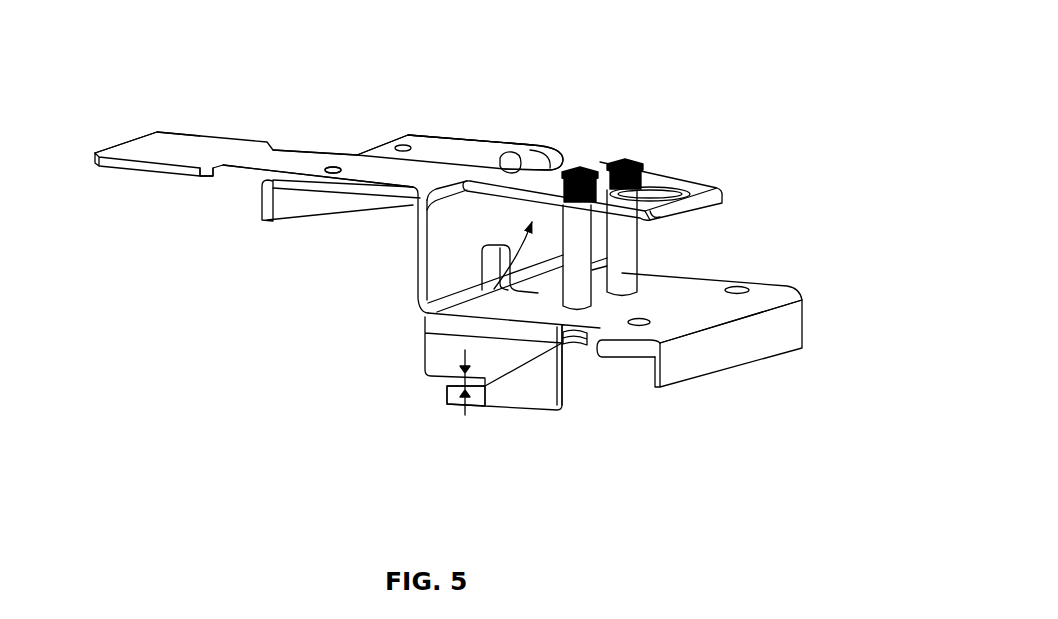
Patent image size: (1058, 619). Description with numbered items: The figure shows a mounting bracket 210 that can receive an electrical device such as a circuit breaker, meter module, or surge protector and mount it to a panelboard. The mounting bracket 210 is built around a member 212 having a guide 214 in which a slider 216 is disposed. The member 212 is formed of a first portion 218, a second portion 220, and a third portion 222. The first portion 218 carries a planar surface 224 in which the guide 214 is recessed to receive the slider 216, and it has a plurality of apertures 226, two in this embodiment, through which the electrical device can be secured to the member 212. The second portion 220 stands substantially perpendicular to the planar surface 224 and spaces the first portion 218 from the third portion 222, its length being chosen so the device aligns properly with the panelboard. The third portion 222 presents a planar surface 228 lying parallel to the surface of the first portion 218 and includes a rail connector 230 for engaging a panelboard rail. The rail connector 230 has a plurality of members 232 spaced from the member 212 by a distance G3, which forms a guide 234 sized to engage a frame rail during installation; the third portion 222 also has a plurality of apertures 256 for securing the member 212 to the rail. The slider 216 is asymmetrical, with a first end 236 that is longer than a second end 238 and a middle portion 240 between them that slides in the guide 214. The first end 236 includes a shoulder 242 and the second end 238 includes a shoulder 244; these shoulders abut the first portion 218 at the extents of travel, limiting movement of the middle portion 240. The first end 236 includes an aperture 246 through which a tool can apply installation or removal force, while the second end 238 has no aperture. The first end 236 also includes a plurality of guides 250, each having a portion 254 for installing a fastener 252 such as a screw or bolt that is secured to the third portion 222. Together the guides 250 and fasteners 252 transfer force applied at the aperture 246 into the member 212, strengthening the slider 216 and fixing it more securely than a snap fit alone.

The mounting bracket 210 is at (782, 50).
The member 212 is at (569, 129).
The guide 214 is at (377, 141).
The slider 216 is at (211, 133).
The first portion 218 is at (471, 131).
The second portion 220 is at (415, 268).
The third portion 222 is at (814, 302).
The planar surface 224 is at (440, 137).
The plurality of apertures 226 is at (402, 144).
The planar surface 228 is at (703, 292).
The rail connector 230 is at (481, 427).
The plurality of members 232 is at (497, 400).
The guide 234 is at (514, 398).
The first end 236 is at (700, 185).
The second end 238 is at (131, 136).
The middle portion 240 is at (501, 152).
The shoulder 242 is at (588, 168).
The shoulder 244 is at (211, 186).
The aperture 246 is at (665, 188).
The plurality of guides 250 is at (620, 160).
The fastener 252 is at (584, 294).
The portion 254 is at (415, 308).
The plurality of apertures 256 is at (749, 297).
The distance G3 is at (447, 390).